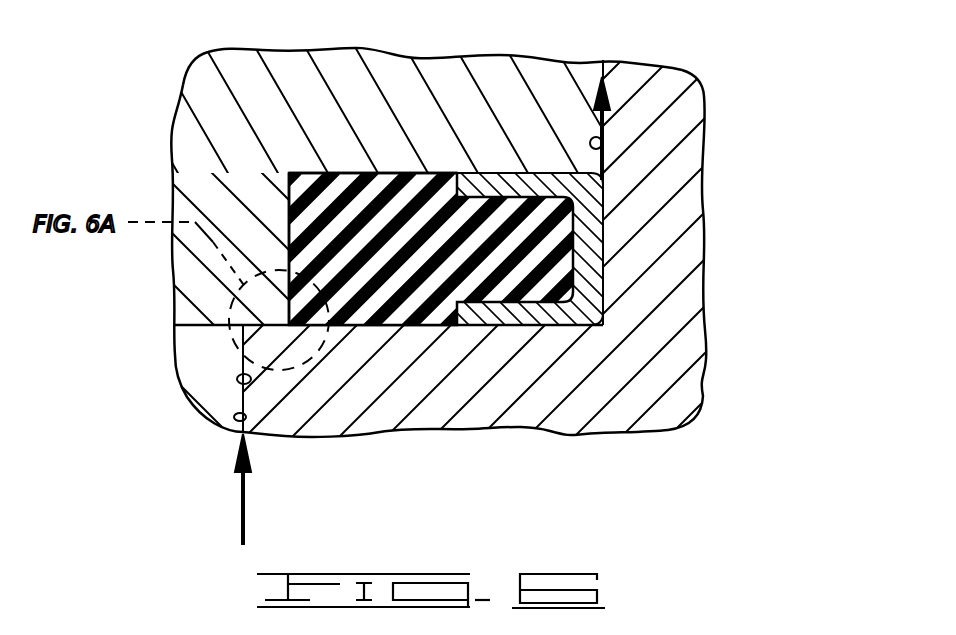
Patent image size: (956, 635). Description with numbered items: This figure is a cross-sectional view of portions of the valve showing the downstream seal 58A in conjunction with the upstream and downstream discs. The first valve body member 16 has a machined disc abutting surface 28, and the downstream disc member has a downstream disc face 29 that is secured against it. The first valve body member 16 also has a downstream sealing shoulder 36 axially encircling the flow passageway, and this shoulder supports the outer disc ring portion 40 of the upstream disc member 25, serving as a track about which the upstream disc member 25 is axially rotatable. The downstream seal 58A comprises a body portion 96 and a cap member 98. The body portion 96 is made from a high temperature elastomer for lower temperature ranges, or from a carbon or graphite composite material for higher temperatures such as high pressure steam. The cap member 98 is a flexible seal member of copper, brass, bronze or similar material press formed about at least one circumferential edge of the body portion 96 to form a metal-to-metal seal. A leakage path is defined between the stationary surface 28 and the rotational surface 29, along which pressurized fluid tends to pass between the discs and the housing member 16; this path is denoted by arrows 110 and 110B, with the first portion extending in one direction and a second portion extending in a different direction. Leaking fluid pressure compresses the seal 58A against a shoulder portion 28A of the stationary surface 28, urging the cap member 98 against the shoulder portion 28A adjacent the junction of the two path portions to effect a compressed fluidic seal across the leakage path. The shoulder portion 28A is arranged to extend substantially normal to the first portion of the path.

The first valve body member 16 is at (645, 73).
The outer disc ring portion 40 is at (303, 65).
The downstream seal 58A is at (450, 160).
The arrow 110B is at (612, 137).
The cap member 98 is at (596, 218).
The shoulder portion 28A is at (603, 325).
The body portion 96 is at (287, 176).
The downstream sealing shoulder 36 is at (248, 297).
The upstream disc member 25 is at (180, 345).
The downstream disc face 29 is at (238, 378).
The disc abutting surface 28 is at (293, 437).
The arrow 110 is at (243, 510).